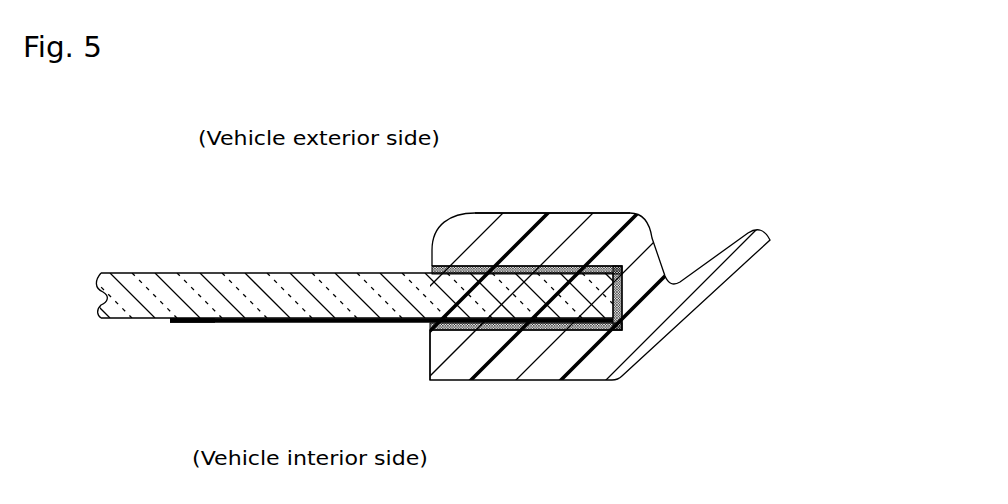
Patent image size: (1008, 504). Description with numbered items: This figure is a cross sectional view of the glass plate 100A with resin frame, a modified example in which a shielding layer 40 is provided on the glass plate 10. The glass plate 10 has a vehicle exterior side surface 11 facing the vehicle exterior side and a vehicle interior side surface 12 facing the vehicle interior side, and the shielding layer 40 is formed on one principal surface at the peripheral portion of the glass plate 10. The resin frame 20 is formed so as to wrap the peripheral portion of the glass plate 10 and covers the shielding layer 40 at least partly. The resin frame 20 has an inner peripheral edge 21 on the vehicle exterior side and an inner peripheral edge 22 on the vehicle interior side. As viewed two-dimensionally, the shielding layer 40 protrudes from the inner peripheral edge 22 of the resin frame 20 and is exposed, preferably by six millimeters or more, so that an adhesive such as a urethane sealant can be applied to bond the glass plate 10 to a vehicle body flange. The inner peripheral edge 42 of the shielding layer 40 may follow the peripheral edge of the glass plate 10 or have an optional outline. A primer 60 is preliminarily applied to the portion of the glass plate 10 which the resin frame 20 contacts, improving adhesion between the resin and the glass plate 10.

The glass plate with resin frame 100A is at (708, 150).
The glass plate 10 is at (124, 299).
The vehicle exterior side surface 11 is at (170, 272).
The vehicle interior side surface 12 is at (125, 320).
The resin frame 20 is at (522, 359).
The inner peripheral edge on the vehicle exterior side 21 is at (440, 231).
The inner peripheral edge on the vehicle interior side 22 is at (430, 353).
The shielding layer 40 is at (291, 323).
The inner peripheral edge of the shielding layer 42 is at (165, 321).
The primer 60 is at (507, 266).